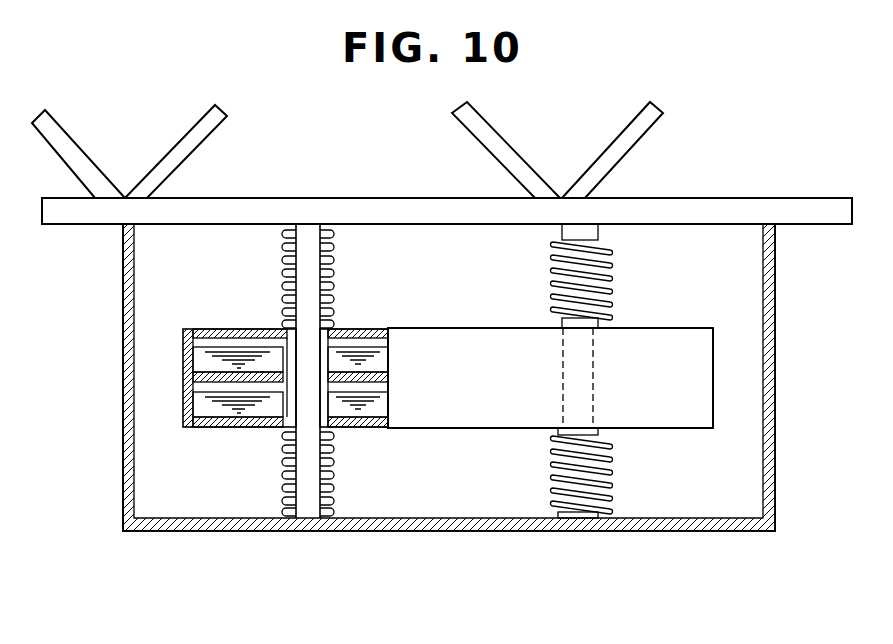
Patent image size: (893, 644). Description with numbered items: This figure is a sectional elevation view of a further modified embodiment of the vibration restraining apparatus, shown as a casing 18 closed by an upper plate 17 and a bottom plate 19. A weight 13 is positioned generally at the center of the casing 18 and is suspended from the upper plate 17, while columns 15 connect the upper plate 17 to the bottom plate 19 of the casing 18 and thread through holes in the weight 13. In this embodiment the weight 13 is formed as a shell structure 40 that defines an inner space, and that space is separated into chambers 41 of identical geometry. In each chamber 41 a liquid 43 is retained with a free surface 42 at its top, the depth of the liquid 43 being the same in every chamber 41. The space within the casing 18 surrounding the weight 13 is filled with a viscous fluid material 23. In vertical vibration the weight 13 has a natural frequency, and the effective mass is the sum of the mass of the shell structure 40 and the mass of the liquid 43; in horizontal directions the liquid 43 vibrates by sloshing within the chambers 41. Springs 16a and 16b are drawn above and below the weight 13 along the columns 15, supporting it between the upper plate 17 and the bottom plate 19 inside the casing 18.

The weight 13 is at (500, 438).
The column 15 is at (583, 240).
The upper spring 16a is at (277, 245).
The lower spring 16b is at (333, 485).
The upper plate 17 is at (87, 226).
The casing 18 is at (775, 473).
The bottom plate 19 is at (732, 538).
The viscous fluid material 23 is at (148, 437).
The shell structure 40 is at (717, 395).
The chamber 41 is at (250, 330).
The free surface 42 is at (210, 340).
The liquid 43 is at (198, 423).